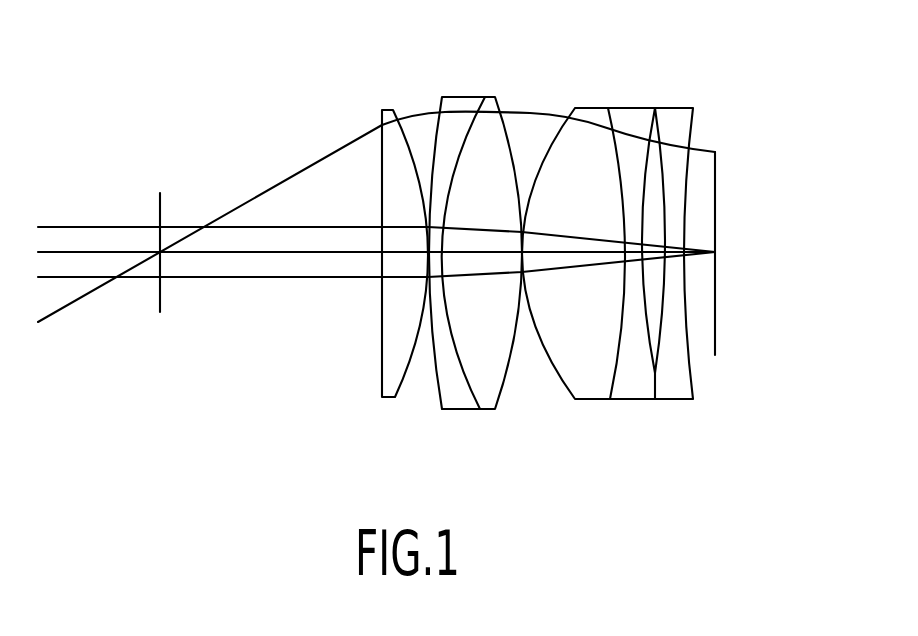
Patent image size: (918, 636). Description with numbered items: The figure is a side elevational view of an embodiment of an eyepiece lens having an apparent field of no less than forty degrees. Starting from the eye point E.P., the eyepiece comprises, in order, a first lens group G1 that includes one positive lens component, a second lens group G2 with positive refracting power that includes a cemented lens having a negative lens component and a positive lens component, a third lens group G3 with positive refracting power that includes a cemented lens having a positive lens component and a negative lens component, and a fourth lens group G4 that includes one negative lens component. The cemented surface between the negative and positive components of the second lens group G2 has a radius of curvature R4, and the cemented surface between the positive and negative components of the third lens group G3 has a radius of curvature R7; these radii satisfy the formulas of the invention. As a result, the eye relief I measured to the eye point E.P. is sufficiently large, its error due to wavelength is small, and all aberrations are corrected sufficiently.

The first lens group G1 is at (388, 112).
The second lens group G2 is at (464, 259).
The third lens group G3 is at (612, 252).
The fourth lens group G4 is at (680, 115).
The radius of curvature of the cemented surface of the second lens group R4 is at (475, 400).
The radius of curvature of the cemented surface of the third lens group R7 is at (612, 388).
The eye point E.P. is at (167, 235).
The eye relief I is at (273, 252).